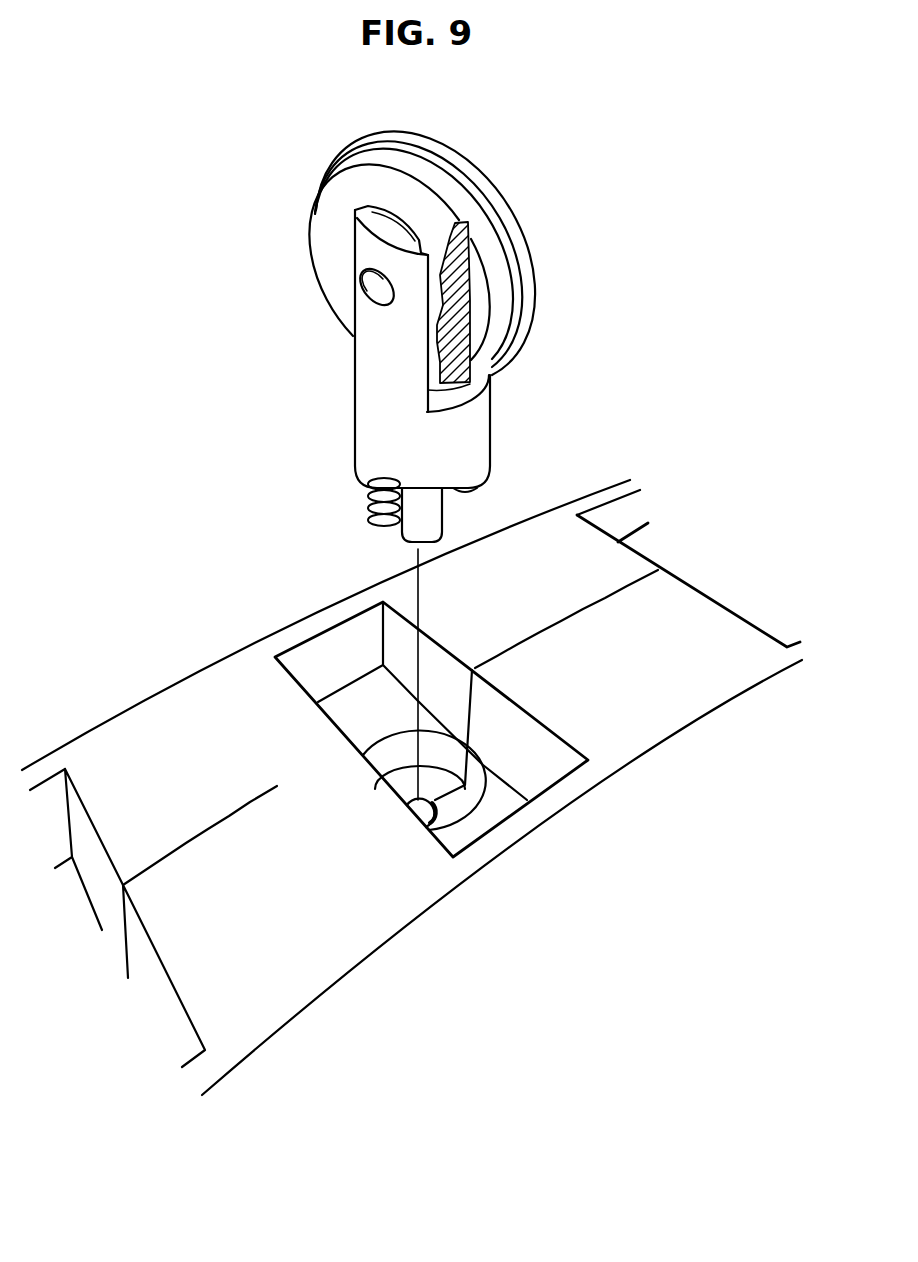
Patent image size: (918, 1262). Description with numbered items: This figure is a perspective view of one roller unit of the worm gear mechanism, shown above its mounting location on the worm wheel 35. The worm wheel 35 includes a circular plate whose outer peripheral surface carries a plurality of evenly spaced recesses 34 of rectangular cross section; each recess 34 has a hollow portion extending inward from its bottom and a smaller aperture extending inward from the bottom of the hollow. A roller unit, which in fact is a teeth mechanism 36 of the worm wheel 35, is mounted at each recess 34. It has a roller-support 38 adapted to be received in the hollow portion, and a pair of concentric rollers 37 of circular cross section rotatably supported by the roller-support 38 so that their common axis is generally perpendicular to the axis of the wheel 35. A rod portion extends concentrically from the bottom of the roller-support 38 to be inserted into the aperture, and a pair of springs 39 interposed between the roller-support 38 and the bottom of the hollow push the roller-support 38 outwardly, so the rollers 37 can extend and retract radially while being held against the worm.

The recess 34 is at (467, 818).
The worm wheel 35 is at (723, 623).
The teeth mechanism 36 is at (498, 400).
The roller 37 is at (498, 205).
The roller-support 38 is at (360, 437).
The spring 39 is at (468, 488).